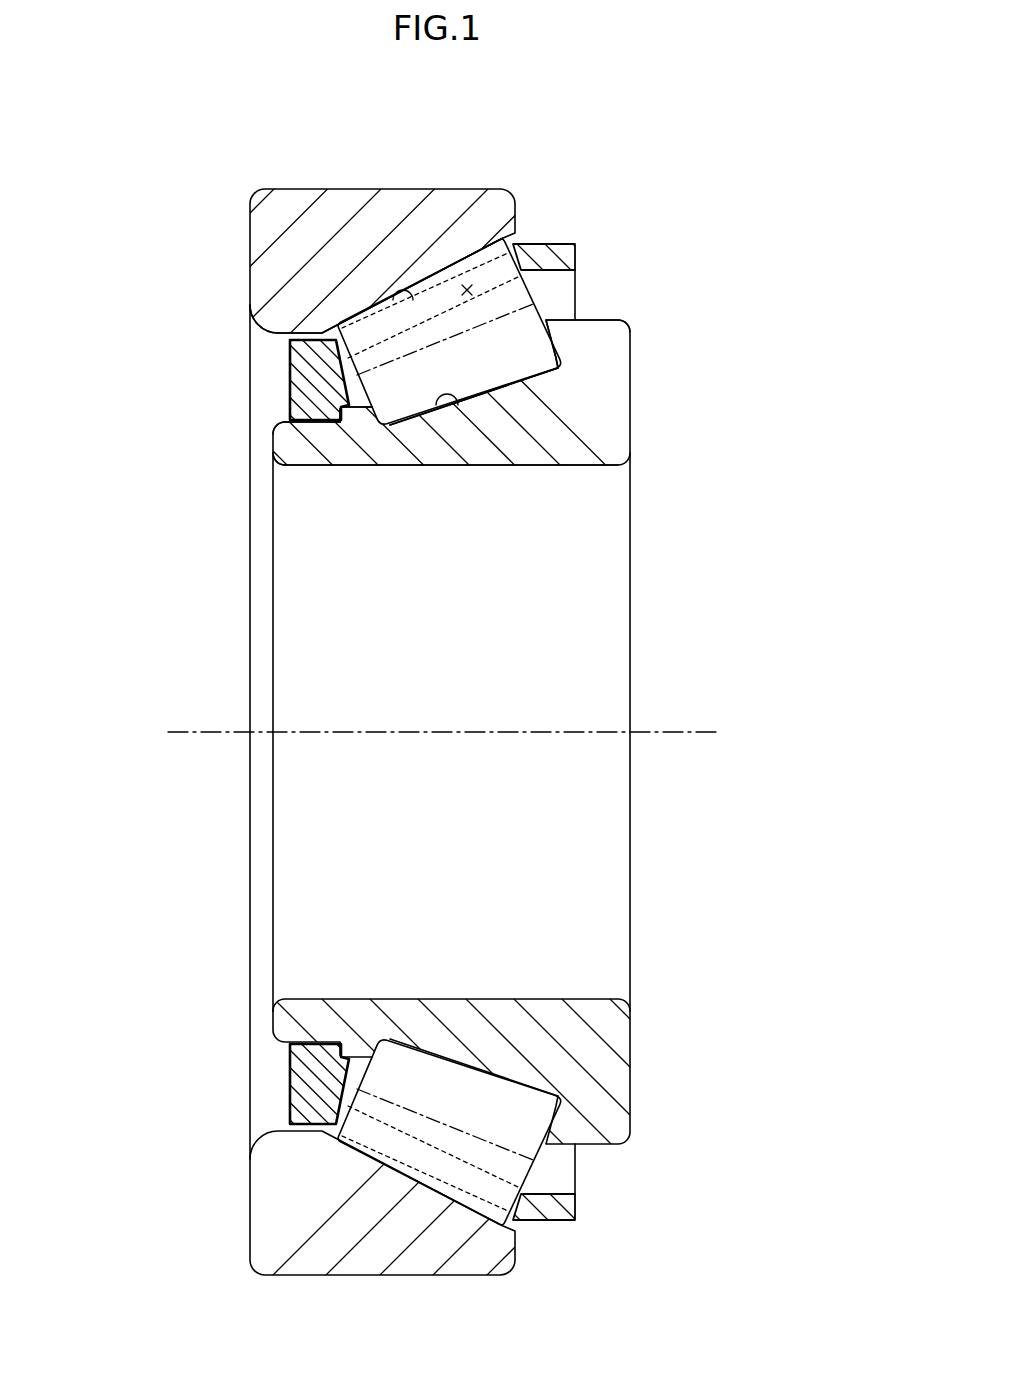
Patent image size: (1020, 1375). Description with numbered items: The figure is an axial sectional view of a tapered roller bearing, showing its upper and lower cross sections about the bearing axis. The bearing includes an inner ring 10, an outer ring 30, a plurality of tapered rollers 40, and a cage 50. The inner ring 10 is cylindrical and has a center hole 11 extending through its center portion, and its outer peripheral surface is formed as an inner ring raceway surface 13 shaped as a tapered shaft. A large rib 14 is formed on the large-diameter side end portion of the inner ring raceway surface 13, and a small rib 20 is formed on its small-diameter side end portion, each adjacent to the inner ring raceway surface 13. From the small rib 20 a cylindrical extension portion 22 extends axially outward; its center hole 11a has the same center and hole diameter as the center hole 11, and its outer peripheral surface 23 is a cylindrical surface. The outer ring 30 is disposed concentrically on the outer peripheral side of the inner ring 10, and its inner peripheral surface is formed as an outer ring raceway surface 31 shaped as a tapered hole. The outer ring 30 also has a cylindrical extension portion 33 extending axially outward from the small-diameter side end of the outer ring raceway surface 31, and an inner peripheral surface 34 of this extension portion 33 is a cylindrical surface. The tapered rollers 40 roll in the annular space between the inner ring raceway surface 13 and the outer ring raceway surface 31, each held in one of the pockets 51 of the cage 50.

The inner ring 10 is at (640, 383).
The center hole 11 is at (556, 468).
The center hole of the extension portion 11a is at (300, 468).
The inner ring raceway surface 13 is at (452, 410).
The large rib 14 is at (599, 335).
The small rib 20 is at (422, 410).
The extension portion 22 is at (285, 443).
The outer peripheral surface 23 is at (327, 425).
The outer ring 30 is at (241, 236).
The outer ring raceway surface 31 is at (410, 296).
The extension portion 33 is at (267, 321).
The inner peripheral surface 34 is at (288, 339).
The tapered roller 40 is at (552, 302).
The cage 50 is at (556, 225).
The pocket 51 is at (470, 280).